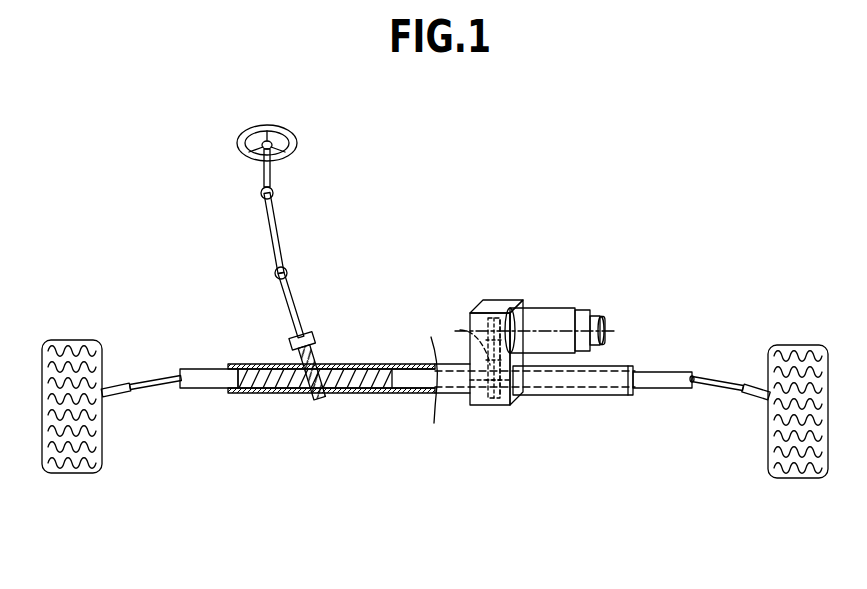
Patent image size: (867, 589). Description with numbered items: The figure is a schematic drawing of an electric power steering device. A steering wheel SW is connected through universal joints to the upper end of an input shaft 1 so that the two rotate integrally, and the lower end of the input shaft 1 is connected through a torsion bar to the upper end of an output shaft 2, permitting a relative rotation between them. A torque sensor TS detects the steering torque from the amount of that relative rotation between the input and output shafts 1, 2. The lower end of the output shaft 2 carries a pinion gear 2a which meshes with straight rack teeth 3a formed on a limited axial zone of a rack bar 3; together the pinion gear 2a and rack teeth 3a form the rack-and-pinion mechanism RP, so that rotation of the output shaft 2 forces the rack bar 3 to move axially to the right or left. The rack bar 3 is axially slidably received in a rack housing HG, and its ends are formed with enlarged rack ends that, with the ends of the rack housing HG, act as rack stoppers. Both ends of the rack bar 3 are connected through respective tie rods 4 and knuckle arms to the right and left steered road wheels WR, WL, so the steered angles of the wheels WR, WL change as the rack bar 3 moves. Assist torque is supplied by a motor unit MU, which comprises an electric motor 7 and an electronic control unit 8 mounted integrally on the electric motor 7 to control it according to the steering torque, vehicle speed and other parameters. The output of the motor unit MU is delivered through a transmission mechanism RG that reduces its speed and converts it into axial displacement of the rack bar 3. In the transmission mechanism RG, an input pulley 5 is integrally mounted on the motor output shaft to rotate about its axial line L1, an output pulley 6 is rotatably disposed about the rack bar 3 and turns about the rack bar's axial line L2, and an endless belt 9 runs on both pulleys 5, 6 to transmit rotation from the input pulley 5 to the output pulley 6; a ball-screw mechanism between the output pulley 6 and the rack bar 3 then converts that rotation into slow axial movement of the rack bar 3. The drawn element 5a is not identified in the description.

The steering wheel SW is at (298, 143).
The input shaft 1 is at (301, 294).
The output shaft 2 is at (339, 394).
The pinion gear 2a is at (312, 402).
The rack bar 3 is at (436, 451).
The rack teeth 3a is at (347, 394).
The rack-and-pinion mechanism RP is at (366, 468).
The torque sensor TS is at (290, 348).
The rack housing HG is at (250, 394).
The tie rod 4 is at (156, 378).
The right steered road wheel WR is at (73, 474).
The left steered road wheel WL is at (796, 479).
The transmission mechanism RG is at (472, 407).
The input pulley 5 is at (495, 312).
The nut pulley 5a is at (510, 314).
The output pulley 6 is at (496, 394).
The endless belt 9 is at (475, 358).
The motor unit MU is at (555, 277).
The electric motor 7 is at (550, 318).
The electronic control unit 8 is at (583, 318).
The axial line of the output shaft of the electric motor L1 is at (608, 318).
The axial line of the rack bar L2 is at (601, 396).